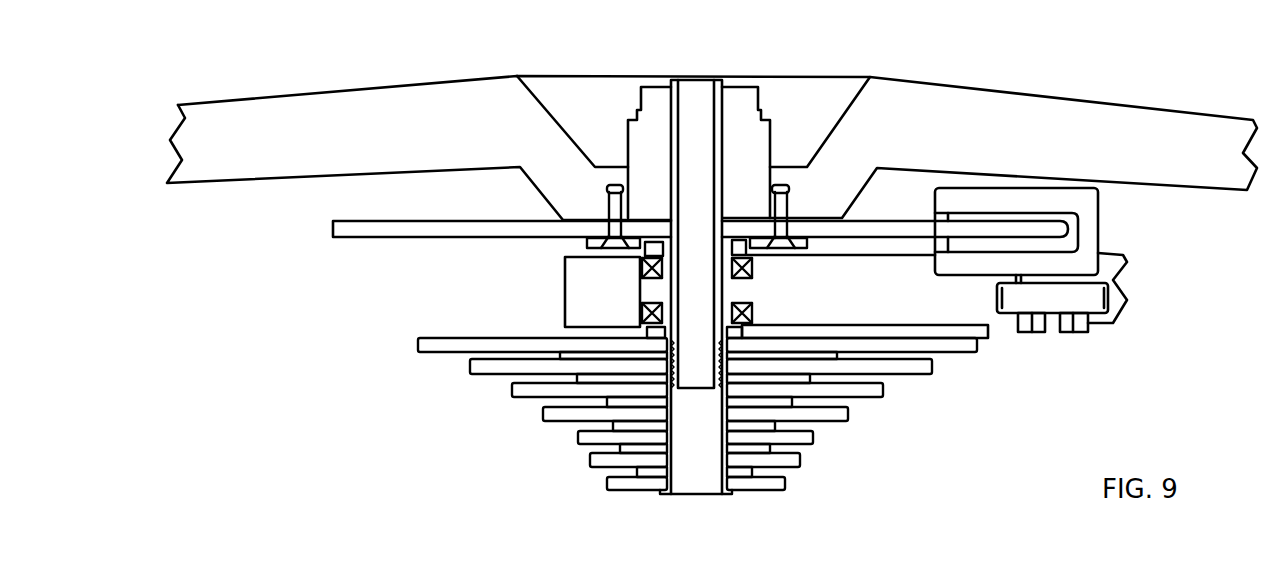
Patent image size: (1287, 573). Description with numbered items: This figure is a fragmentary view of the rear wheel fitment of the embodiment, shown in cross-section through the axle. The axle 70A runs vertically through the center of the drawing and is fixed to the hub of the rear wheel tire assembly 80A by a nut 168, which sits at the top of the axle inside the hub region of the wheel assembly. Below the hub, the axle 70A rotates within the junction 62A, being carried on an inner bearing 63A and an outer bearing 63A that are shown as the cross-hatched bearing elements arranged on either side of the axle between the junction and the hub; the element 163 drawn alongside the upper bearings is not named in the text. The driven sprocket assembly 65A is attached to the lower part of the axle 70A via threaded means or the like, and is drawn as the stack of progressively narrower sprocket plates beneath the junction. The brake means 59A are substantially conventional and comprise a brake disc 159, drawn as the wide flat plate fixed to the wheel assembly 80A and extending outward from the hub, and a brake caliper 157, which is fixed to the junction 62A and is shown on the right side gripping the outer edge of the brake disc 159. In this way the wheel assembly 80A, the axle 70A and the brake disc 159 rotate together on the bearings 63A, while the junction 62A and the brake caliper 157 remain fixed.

The axle 70A is at (702, 105).
The nut 168 is at (743, 97).
The rear wheel tire assembly 80A is at (1008, 110).
The brake means 59A is at (1110, 227).
The brake caliper 157 is at (1075, 263).
The upper bearing 163 is at (752, 268).
The bearing 63A is at (753, 315).
The brake disc 159 is at (397, 228).
The junction 62A is at (988, 326).
The driven sprocket assembly 65A is at (848, 414).